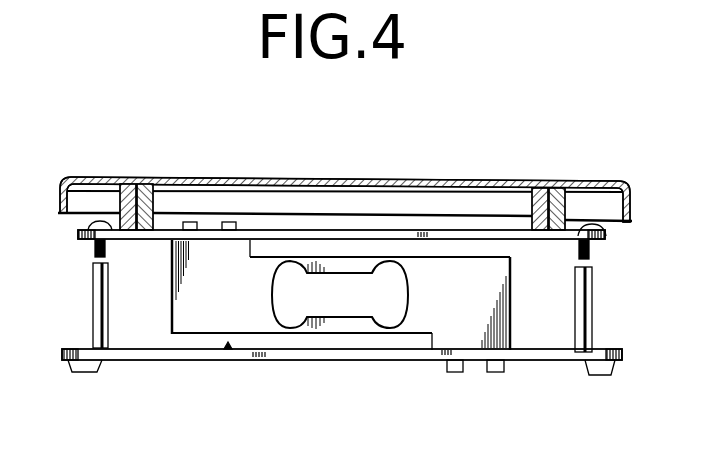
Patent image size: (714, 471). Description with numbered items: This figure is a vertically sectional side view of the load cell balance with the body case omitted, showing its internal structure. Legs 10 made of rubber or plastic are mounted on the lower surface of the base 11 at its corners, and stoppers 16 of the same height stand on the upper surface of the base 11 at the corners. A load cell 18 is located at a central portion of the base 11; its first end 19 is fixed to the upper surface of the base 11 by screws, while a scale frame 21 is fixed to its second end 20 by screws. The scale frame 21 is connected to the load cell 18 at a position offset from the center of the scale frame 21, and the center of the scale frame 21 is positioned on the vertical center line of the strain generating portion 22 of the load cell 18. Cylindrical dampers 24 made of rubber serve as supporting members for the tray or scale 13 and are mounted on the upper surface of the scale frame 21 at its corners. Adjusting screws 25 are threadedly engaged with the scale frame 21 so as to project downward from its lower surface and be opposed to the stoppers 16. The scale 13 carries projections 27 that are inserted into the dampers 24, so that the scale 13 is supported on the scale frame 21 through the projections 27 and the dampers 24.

The legs 10 is at (93, 373).
The base 11 is at (548, 360).
The tray (scale) 13 is at (596, 183).
The stoppers 16 is at (97, 292).
The load cell 18 is at (228, 349).
The first end of the load cell 19 is at (471, 337).
The second end of the load cell 20 is at (188, 250).
The scale frame 21 is at (340, 232).
The strain generating portion 22 is at (343, 326).
The cylindrical dampers 24 is at (122, 190).
The adjusting screws 25 is at (92, 228).
The projections 27 is at (138, 190).